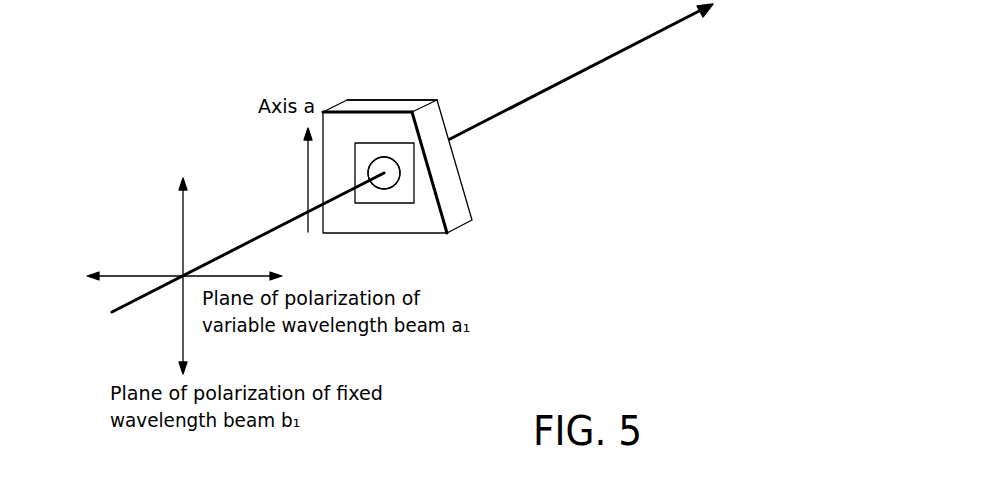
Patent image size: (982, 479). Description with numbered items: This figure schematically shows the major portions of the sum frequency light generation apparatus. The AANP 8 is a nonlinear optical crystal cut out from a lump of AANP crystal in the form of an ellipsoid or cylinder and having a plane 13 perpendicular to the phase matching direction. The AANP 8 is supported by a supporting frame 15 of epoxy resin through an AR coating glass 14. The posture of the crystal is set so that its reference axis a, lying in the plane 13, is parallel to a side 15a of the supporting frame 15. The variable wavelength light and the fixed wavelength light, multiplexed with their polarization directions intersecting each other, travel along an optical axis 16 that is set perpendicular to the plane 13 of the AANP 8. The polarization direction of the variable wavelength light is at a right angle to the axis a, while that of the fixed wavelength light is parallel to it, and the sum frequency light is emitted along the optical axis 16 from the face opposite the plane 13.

The AANP 8 is at (388, 157).
The plane 13 is at (383, 189).
The AR coating glass 14 is at (402, 195).
The supporting frame 15 is at (457, 217).
The side 15a is at (343, 102).
The optical axis 16 is at (495, 113).